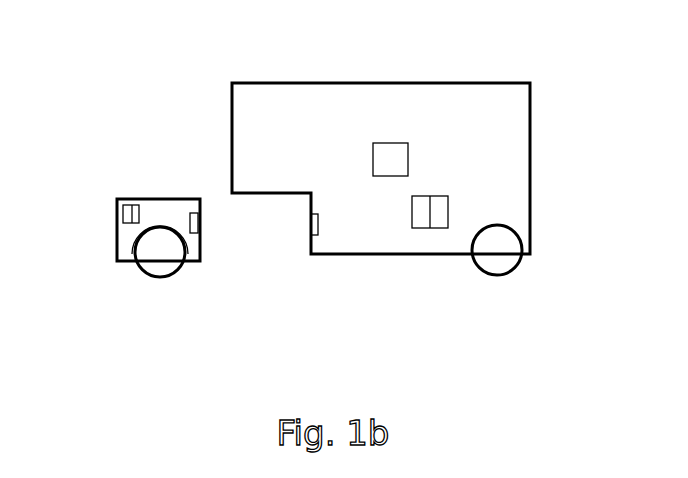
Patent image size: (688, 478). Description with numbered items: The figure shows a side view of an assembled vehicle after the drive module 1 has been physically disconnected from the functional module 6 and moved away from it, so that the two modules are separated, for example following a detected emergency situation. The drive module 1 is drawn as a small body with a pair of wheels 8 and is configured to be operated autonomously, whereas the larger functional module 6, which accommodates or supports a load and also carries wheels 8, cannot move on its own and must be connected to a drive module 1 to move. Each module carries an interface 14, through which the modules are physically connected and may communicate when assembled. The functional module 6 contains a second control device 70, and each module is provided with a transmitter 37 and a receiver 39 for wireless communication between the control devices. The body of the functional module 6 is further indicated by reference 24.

The drive module 1 is at (288, 228).
The functional module 6 is at (408, 134).
The wheels 8 is at (170, 278).
The interfaces 14 is at (202, 225).
The vehicle body 24 is at (435, 122).
The transmitter 37 is at (122, 205).
The receiver 39 is at (142, 208).
The second control device 70 is at (410, 153).